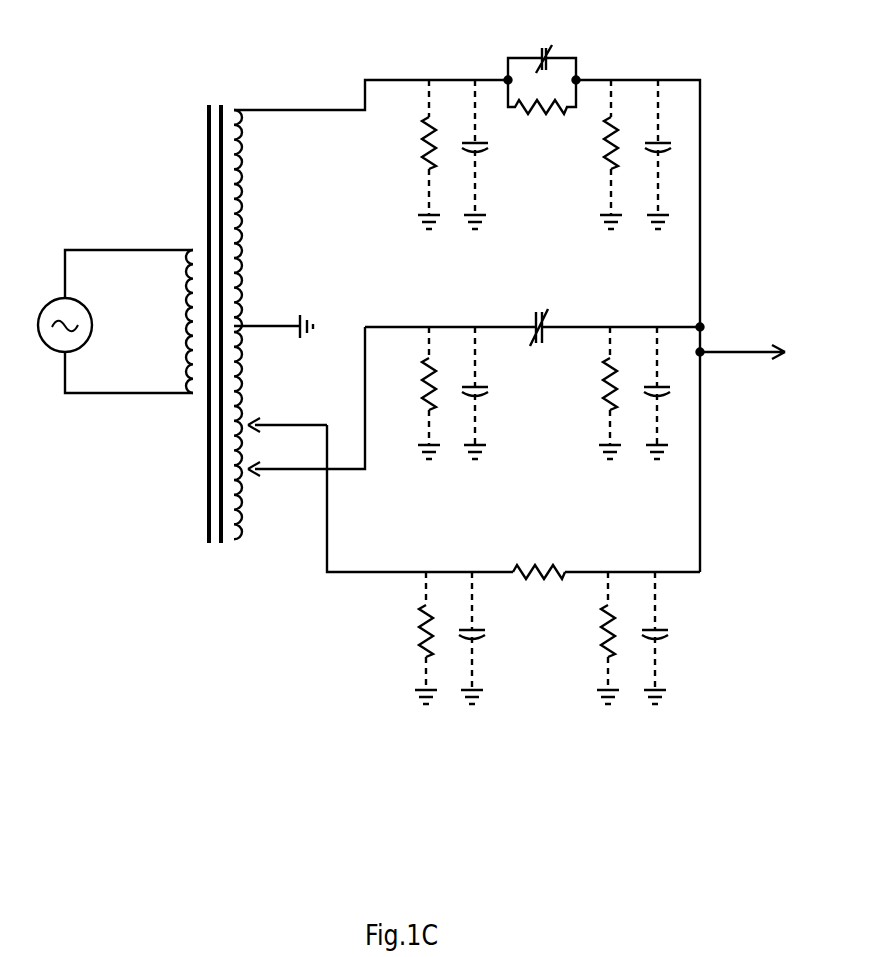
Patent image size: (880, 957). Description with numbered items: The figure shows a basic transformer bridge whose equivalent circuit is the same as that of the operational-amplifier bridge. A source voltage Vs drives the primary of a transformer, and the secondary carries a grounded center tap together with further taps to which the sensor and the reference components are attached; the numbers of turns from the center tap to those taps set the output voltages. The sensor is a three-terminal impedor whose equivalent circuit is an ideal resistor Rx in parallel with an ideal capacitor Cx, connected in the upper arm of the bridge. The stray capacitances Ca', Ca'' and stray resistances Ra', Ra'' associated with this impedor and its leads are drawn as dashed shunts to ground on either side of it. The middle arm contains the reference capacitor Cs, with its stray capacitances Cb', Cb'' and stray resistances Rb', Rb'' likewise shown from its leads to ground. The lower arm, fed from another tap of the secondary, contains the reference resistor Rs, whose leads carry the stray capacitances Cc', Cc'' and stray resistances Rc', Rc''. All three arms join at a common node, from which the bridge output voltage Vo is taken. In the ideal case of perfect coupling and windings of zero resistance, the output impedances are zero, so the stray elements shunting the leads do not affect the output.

The source voltage Vs is at (115, 321).
The output voltage Vo is at (741, 341).
The ideal capacitor Cx is at (542, 51).
The ideal resistor Rx is at (542, 113).
The reference capacitor Cs is at (530, 317).
The reference resistor Rs is at (535, 558).
The stray resistance Ra' is at (418, 154).
The stray capacitance Ca' is at (489, 154).
The stray resistance Ra'' is at (598, 154).
The stray capacitance Ca'' is at (672, 154).
The stray resistance Rb' is at (418, 393).
The stray capacitance Cb' is at (489, 393).
The stray resistance Rb'' is at (596, 393).
The stray capacitance Cb'' is at (672, 393).
The stray resistance Rc' is at (415, 638).
The stray capacitance Cc' is at (485, 638).
The stray resistance Rc'' is at (595, 638).
The stray capacitance Cc'' is at (670, 638).